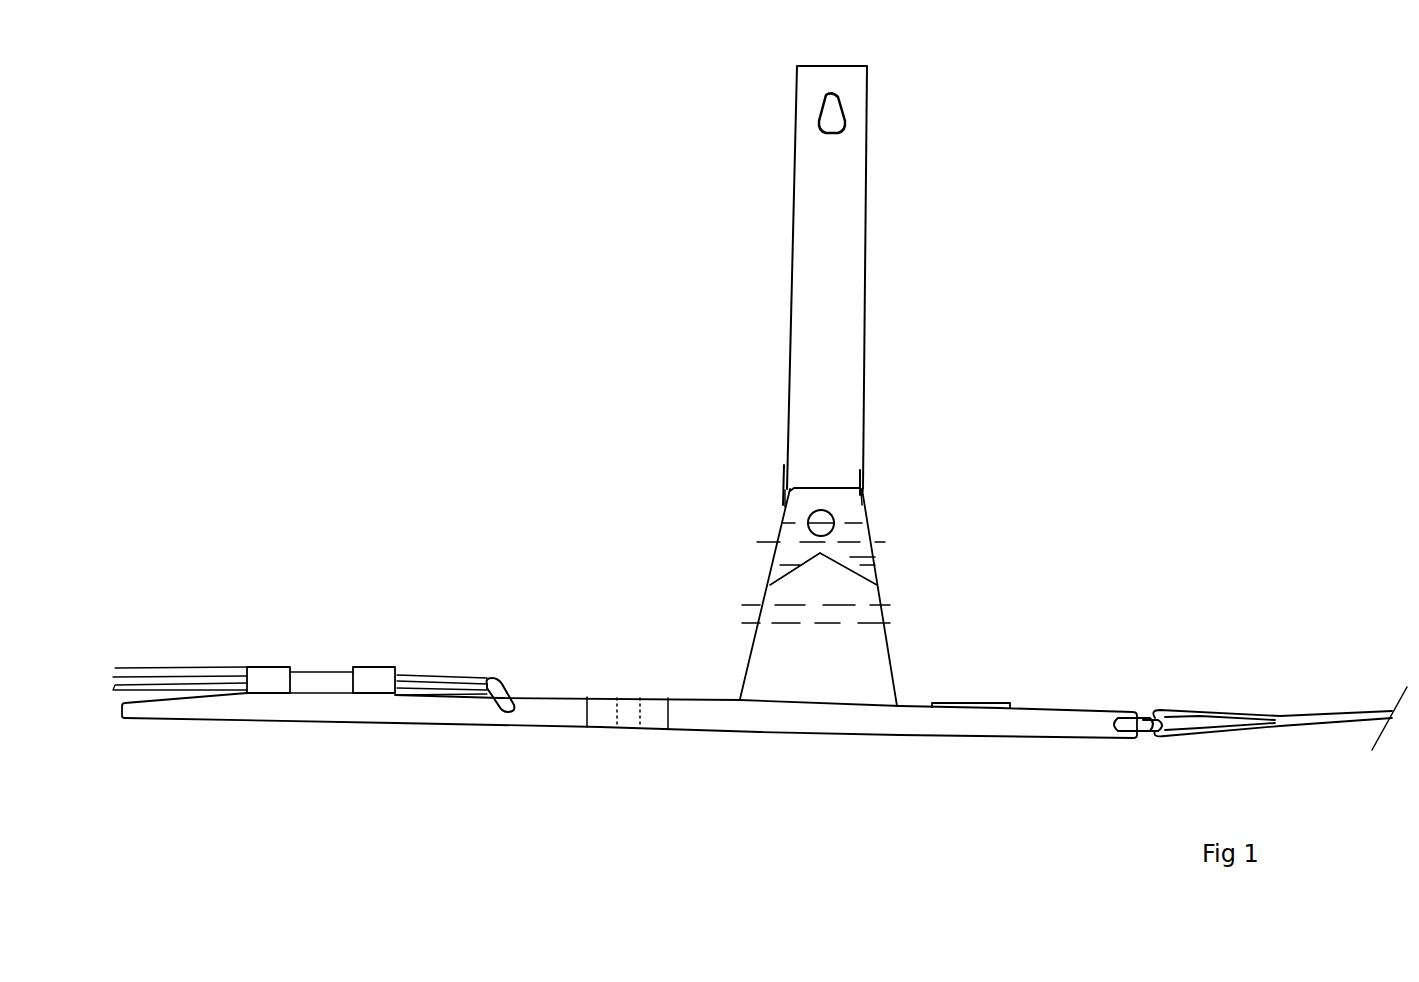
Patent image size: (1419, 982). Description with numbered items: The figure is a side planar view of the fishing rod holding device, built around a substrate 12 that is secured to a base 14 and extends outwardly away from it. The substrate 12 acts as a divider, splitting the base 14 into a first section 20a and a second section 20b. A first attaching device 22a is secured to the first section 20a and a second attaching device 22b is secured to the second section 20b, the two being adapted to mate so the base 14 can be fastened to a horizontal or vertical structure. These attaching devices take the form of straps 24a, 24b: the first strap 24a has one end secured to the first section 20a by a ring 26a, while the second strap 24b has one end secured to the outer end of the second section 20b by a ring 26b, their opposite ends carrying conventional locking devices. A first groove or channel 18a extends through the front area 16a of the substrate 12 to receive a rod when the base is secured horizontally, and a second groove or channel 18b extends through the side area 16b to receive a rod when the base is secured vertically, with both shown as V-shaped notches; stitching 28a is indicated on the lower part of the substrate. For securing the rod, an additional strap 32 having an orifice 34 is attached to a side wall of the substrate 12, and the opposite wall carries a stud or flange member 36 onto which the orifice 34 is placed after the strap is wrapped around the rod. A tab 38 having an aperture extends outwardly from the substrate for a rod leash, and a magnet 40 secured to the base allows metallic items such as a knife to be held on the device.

The substrate 12 is at (900, 657).
The base 14 is at (784, 721).
The front area 16a is at (872, 507).
The side area 16b is at (798, 503).
The first groove or channel 18a is at (850, 557).
The second groove or channel 18b is at (770, 563).
The first section 20a is at (1072, 692).
The second section 20b is at (312, 730).
The first attaching device 22a is at (317, 660).
The second attaching device 22b is at (370, 655).
The first strap 24a is at (1242, 700).
The second strap 24b is at (431, 652).
The ring 26a is at (1147, 703).
The ring 26b is at (503, 678).
The stitching 28a is at (730, 603).
The additional strap 32 is at (875, 243).
The orifice 34 is at (836, 112).
The stud or flange member 36 is at (829, 514).
The tab 38 is at (600, 685).
The magnet 40 is at (968, 692).